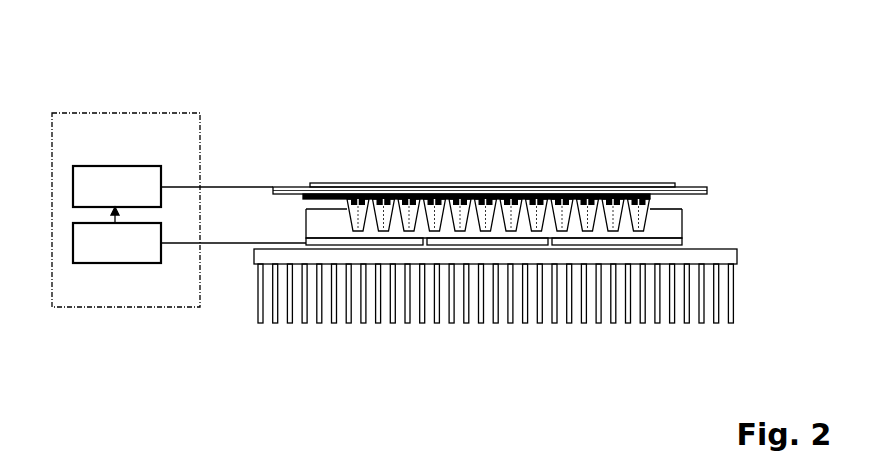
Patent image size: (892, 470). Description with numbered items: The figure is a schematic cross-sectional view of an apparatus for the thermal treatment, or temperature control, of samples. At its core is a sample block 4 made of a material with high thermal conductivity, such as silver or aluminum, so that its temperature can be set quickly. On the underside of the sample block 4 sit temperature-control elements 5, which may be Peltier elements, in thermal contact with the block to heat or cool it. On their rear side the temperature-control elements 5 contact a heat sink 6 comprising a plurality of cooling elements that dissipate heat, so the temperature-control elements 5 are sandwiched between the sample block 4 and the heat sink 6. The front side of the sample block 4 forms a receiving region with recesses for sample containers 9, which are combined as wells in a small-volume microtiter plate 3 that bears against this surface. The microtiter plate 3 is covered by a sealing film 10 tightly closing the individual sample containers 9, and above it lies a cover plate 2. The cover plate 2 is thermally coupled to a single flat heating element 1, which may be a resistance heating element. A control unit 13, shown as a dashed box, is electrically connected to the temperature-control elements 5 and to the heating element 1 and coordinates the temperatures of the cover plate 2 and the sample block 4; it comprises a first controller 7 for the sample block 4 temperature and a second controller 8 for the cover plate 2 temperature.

The heating element 1 is at (604, 184).
The cover plate 2 is at (658, 192).
The microtiter plate 3 is at (651, 208).
The sample block 4 is at (670, 228).
The temperature-control elements 5 is at (672, 242).
The heat sink 6 is at (727, 255).
The first controller 7 is at (140, 252).
The second controller 8 is at (138, 175).
The sample containers 9 is at (368, 203).
The sealing film 10 is at (445, 196).
The control unit 13 is at (130, 112).